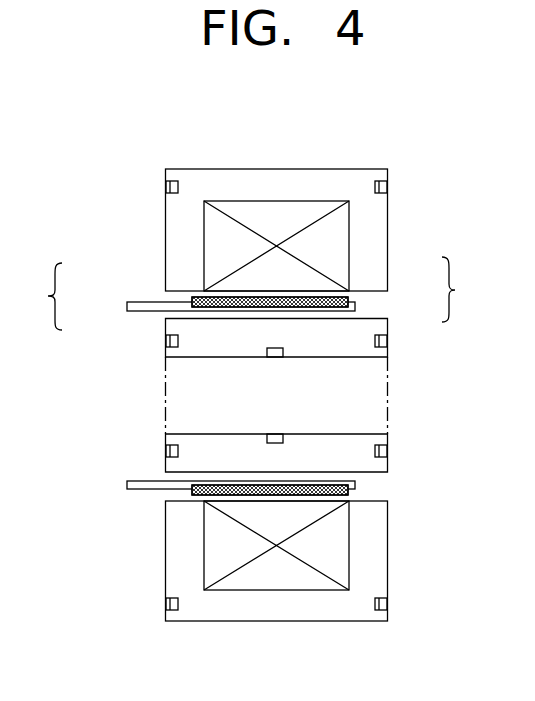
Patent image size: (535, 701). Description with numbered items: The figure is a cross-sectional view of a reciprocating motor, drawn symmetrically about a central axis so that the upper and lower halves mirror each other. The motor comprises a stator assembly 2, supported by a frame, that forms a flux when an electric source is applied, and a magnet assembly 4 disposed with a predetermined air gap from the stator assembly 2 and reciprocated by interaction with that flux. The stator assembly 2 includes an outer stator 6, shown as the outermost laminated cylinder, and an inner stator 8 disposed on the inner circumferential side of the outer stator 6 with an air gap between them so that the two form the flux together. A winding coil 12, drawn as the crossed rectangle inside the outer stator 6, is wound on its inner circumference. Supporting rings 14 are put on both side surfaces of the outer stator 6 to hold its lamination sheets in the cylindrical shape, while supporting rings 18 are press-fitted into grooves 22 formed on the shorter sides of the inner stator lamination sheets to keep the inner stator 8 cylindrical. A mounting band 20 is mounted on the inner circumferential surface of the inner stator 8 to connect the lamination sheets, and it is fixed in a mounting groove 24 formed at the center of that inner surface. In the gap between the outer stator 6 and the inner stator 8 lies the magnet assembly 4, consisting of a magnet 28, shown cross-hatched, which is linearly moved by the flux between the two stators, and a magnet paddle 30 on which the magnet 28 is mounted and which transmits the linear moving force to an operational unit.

The stator assembly 2 is at (455, 289).
The magnet assembly 4 is at (46, 296).
The outer stator 6 is at (309, 202).
The inner stator 8 is at (321, 345).
The winding coil 12 is at (280, 213).
The supporting rings 14 is at (386, 186).
The supporting rings 18 is at (387, 342).
The mounting band 20 is at (278, 357).
The grooves 22 is at (168, 452).
The mounting groove 24 is at (278, 434).
The magnet 28 is at (196, 298).
The magnet paddle 30 is at (153, 310).